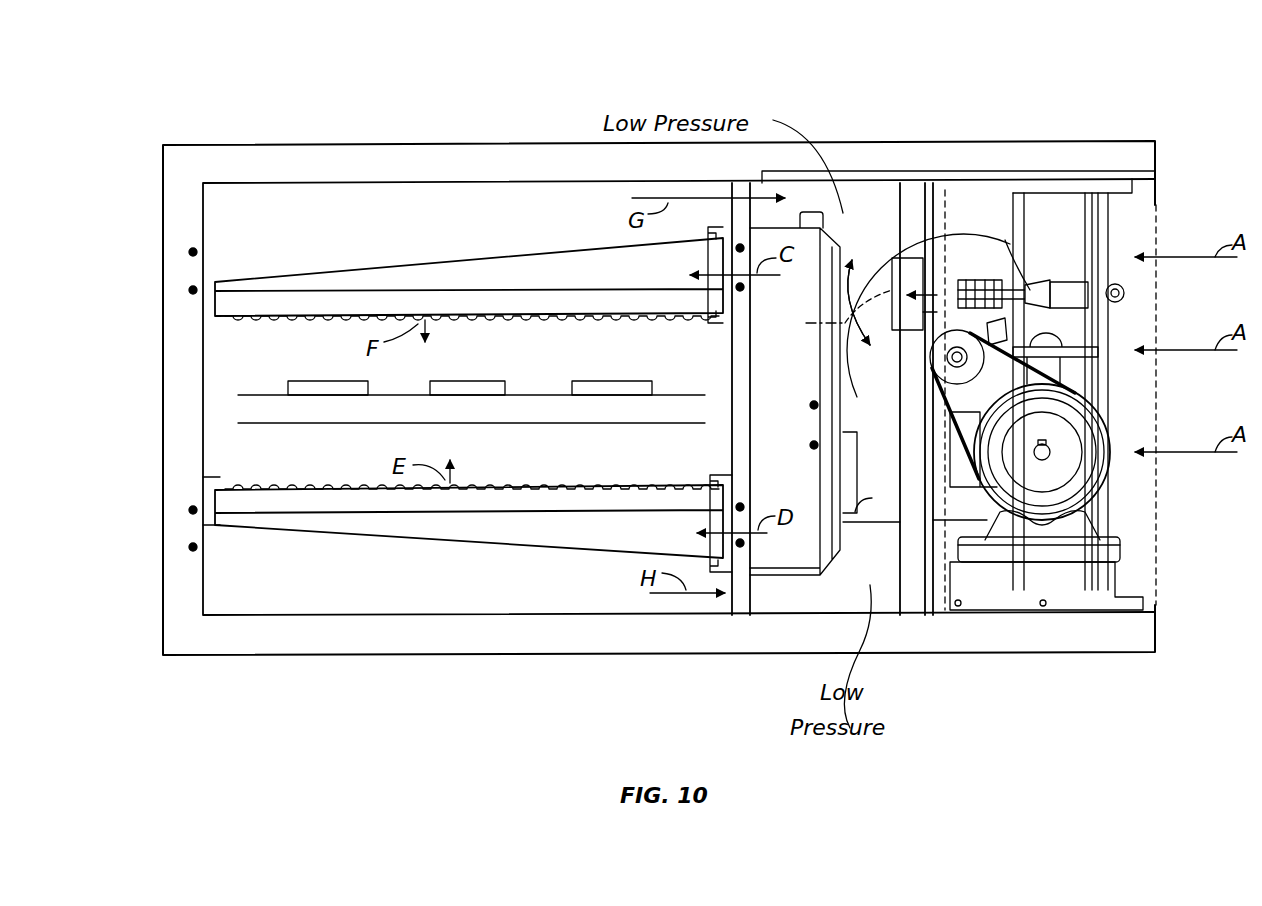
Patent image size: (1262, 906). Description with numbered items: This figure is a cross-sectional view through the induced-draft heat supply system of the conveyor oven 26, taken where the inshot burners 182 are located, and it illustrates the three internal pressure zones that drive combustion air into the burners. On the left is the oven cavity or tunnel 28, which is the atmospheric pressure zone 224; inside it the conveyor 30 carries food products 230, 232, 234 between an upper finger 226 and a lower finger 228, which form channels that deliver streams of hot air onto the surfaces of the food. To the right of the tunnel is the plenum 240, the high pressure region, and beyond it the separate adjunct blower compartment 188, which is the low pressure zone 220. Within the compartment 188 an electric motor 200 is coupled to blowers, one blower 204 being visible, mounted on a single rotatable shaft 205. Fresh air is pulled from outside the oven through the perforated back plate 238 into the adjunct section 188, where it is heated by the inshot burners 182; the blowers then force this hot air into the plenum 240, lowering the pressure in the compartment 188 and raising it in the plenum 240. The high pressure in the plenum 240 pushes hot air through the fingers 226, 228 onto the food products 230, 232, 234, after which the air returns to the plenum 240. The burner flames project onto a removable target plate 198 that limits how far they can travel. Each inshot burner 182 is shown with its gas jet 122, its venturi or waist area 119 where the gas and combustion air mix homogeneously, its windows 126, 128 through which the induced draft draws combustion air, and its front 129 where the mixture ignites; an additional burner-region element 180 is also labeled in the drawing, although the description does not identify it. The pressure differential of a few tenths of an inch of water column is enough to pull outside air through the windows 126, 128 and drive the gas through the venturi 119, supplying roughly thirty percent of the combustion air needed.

The oven 26 is at (390, 667).
The oven cavity or tunnel 28 is at (288, 228).
The conveyor 30 is at (432, 425).
The venturi or waist area 119 is at (1008, 252).
The jet 122 is at (1110, 257).
The window 126 is at (1065, 290).
The window 128 is at (1040, 352).
The front of the burner 129 is at (943, 280).
The bearing ring 180 is at (1125, 293).
The inshot burner 182 is at (955, 283).
The compartment 188 is at (990, 206).
The target plate 198 is at (827, 313).
The electric motor 200 is at (1112, 442).
The blower 204 is at (1013, 282).
The rotatable shaft 205 is at (957, 357).
The low pressure zone 220 is at (805, 603).
The atmospheric pressure zone 224 is at (476, 604).
The upper finger 226 is at (400, 262).
The lower finger 228 is at (330, 537).
The food product 230 is at (300, 381).
The food product 232 is at (462, 363).
The food product 234 is at (590, 381).
The back plate 238 is at (1155, 203).
The plenum 240 is at (815, 553).